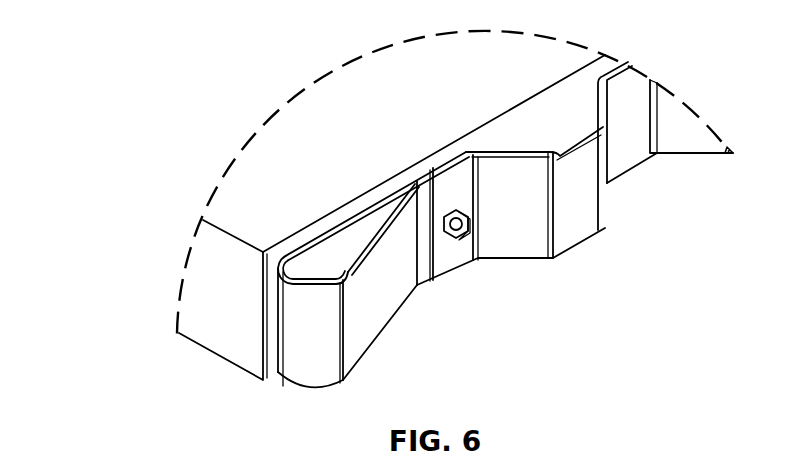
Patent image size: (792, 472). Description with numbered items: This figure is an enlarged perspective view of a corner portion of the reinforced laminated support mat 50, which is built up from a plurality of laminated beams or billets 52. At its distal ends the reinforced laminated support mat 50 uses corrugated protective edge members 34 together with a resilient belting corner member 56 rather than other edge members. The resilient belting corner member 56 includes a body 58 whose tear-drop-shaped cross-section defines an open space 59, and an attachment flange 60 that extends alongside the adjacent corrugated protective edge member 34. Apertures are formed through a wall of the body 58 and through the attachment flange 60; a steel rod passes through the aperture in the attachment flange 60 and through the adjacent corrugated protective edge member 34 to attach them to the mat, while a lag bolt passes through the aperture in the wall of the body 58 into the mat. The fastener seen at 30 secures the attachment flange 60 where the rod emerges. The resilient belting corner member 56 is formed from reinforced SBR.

The reinforced laminated support mat 50 is at (224, 98).
The laminated beams or billets 52 is at (217, 342).
The resilient belting corner member 56 is at (368, 204).
The body 58 is at (313, 372).
The open space 59 is at (318, 258).
The attachment flange 60 is at (416, 205).
The nut 30 is at (455, 208).
The corrugated protective edge member 34 is at (620, 162).